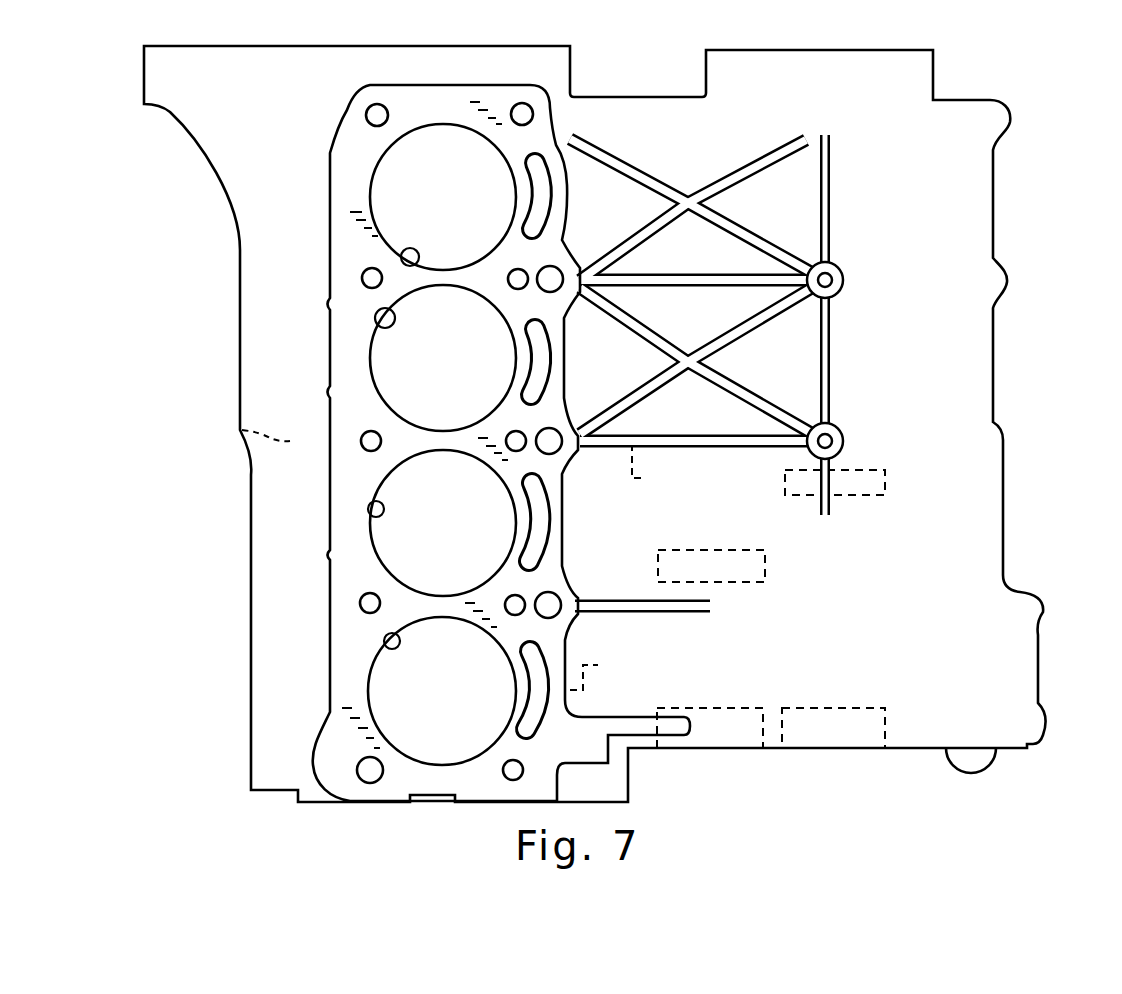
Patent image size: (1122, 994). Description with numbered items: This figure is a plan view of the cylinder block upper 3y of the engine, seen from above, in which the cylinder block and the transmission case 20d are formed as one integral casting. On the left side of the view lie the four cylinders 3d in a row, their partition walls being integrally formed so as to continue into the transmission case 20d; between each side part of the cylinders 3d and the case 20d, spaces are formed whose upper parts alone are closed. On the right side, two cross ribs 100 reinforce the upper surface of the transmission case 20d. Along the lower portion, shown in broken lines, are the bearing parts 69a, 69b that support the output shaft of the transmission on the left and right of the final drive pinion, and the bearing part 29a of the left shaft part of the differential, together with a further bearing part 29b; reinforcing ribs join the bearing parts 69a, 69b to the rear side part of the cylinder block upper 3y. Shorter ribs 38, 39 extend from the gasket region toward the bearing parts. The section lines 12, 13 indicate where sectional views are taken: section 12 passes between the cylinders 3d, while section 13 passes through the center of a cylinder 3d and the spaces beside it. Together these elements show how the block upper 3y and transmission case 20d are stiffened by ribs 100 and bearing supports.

The cylinder block upper 3y is at (570, 47).
The transmission case 20d is at (678, 138).
The cross ribs 100 is at (730, 230).
The cylinders 3d is at (414, 262).
The fourth speed shift gear 39 is at (630, 608).
The third speed shift gear 38 is at (642, 724).
The left side bearing part 69a is at (727, 732).
The right side bearing part 69b is at (710, 562).
The differential bearing part 29a is at (855, 732).
The water passage opening 29b is at (852, 488).
The section line 12— 12 is at (220, 430).
The section line 13— 13 is at (220, 688).